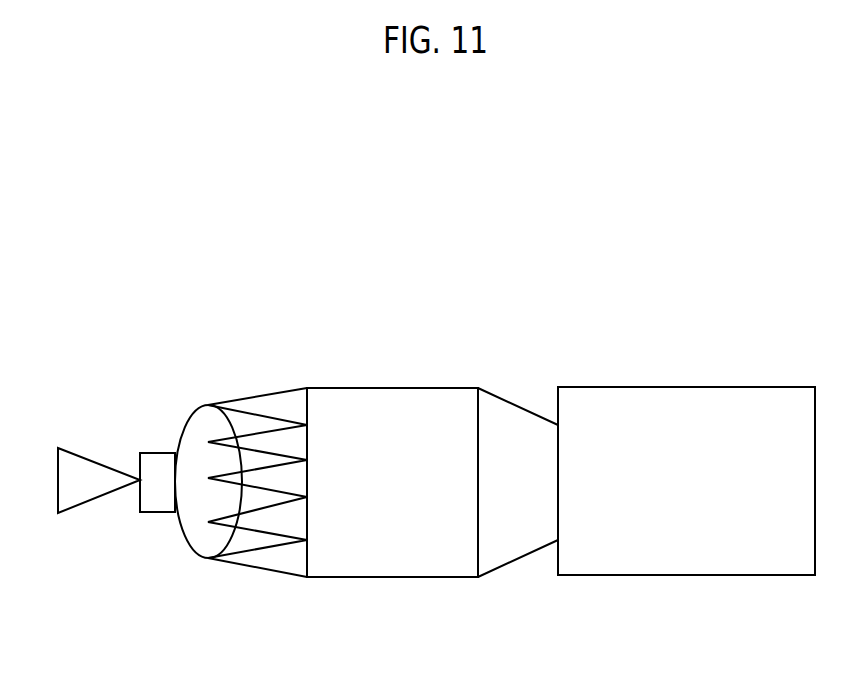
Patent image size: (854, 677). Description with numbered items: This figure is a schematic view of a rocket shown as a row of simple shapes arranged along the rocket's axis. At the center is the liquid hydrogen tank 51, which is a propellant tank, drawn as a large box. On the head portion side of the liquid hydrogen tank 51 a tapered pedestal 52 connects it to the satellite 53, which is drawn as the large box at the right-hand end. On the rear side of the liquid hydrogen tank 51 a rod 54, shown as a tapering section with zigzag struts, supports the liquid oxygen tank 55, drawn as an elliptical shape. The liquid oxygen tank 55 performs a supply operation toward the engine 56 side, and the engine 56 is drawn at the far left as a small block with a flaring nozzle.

The liquid hydrogen tank 51 is at (390, 387).
The pedestal 52 is at (522, 560).
The satellite 53 is at (703, 577).
The rod 54 is at (255, 572).
The liquid oxygen tank 55 is at (180, 438).
The engine 56 is at (83, 448).